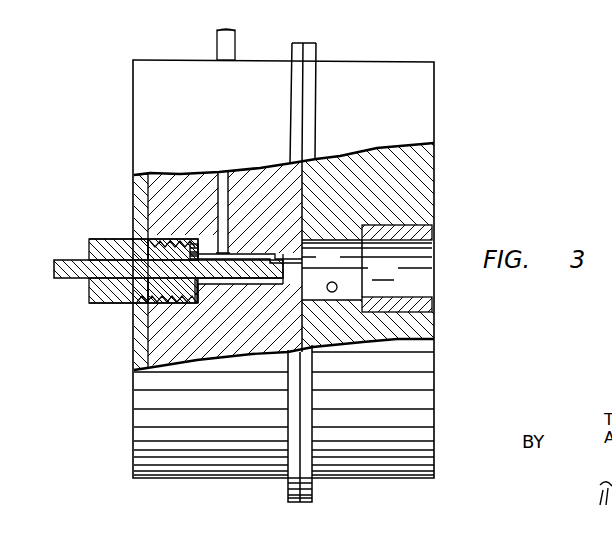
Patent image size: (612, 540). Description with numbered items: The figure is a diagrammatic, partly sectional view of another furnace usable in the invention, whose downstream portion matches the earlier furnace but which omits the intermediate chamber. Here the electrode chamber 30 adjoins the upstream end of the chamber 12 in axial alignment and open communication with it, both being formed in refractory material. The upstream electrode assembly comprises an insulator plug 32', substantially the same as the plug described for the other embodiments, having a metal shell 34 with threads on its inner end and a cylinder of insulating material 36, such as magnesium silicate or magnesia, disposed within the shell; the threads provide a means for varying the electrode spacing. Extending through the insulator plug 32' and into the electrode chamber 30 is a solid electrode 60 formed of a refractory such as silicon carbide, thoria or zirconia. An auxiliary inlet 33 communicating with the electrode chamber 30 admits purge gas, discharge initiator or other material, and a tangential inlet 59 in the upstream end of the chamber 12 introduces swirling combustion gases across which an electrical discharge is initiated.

The chamber 12 is at (367, 268).
The electrode chamber 30 is at (256, 285).
The insulator plug 32' is at (123, 230).
The auxiliary inlet 33 is at (222, 171).
The metal shell 34 is at (108, 304).
The insulating material 36 is at (88, 288).
The tangential inlet 59 is at (327, 284).
The solid electrode 60 is at (65, 260).